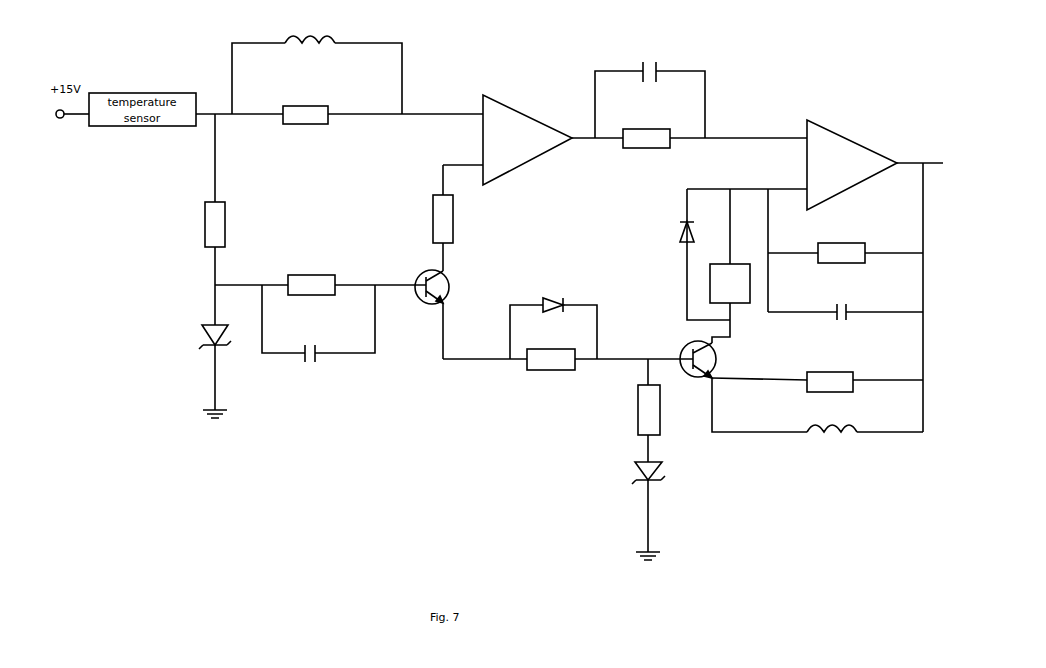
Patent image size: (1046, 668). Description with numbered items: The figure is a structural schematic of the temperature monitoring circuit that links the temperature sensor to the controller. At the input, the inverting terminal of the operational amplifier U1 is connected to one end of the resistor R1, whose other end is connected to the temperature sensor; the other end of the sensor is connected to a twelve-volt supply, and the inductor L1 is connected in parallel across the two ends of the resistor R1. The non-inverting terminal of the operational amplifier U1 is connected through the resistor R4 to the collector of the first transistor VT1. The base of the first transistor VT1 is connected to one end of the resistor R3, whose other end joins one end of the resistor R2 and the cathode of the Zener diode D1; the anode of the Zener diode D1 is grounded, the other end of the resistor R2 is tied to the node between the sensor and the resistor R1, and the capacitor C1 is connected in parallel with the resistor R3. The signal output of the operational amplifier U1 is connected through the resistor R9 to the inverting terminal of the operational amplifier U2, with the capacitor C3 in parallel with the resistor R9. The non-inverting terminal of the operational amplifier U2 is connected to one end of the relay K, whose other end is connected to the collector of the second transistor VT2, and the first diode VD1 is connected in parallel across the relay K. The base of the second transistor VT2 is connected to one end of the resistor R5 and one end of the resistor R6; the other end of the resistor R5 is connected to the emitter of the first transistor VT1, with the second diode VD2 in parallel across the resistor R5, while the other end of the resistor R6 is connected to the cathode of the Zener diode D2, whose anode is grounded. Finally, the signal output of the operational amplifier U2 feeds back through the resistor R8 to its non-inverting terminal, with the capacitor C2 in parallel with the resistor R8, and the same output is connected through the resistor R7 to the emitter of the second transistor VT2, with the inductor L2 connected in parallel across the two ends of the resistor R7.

The inductor L1 is at (317, 62).
The resistor R1 is at (305, 128).
The resistor R2 is at (205, 199).
The resistor R3 is at (311, 297).
The resistor R4 is at (432, 218).
The resistor R5 is at (551, 371).
The resistor R6 is at (636, 410).
The resistor R7 is at (817, 375).
The resistor R8 is at (845, 265).
The resistor R9 is at (646, 151).
The capacitor C1 is at (318, 333).
The capacitor C2 is at (845, 320).
The capacitor C3 is at (650, 87).
The Zener diode D1 is at (202, 351).
The Zener diode D2 is at (635, 511).
The first diode VD1 is at (705, 254).
The second diode VD2 is at (553, 317).
The first transistor VT1 is at (447, 314).
The second transistor VT2 is at (715, 359).
The operational amplifier U1 is at (507, 140).
The operational amplifier U2 is at (815, 165).
The relay K is at (730, 246).
The inductor L2 is at (817, 415).